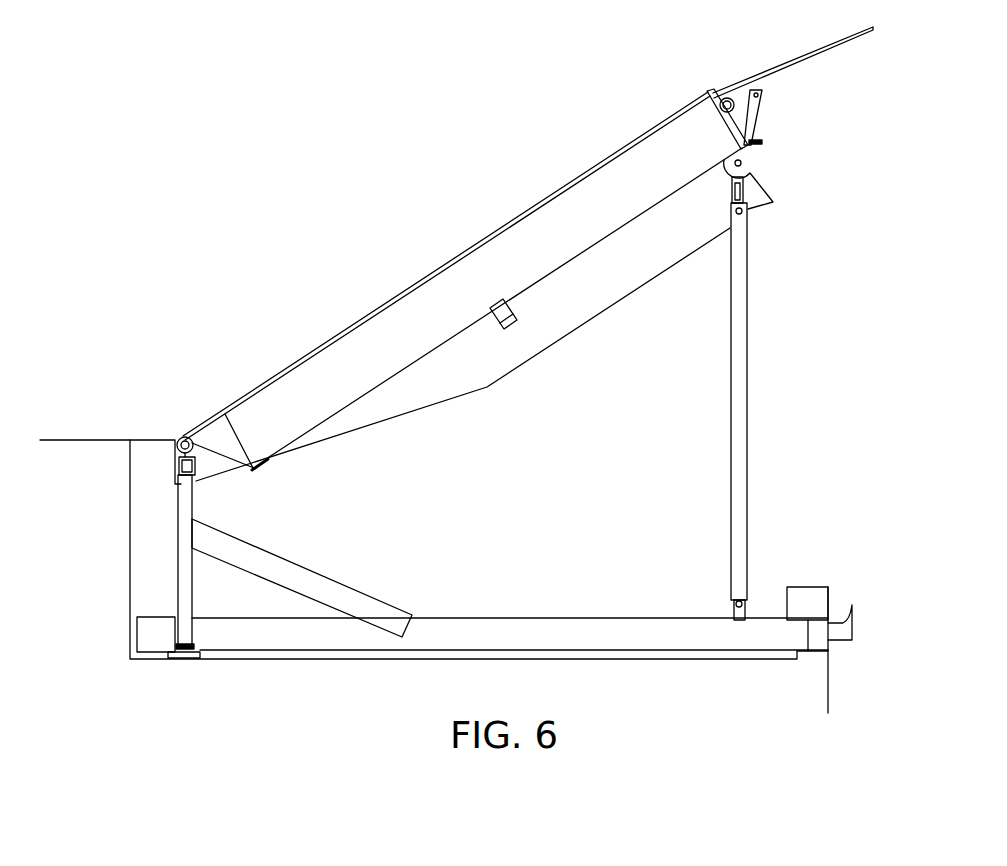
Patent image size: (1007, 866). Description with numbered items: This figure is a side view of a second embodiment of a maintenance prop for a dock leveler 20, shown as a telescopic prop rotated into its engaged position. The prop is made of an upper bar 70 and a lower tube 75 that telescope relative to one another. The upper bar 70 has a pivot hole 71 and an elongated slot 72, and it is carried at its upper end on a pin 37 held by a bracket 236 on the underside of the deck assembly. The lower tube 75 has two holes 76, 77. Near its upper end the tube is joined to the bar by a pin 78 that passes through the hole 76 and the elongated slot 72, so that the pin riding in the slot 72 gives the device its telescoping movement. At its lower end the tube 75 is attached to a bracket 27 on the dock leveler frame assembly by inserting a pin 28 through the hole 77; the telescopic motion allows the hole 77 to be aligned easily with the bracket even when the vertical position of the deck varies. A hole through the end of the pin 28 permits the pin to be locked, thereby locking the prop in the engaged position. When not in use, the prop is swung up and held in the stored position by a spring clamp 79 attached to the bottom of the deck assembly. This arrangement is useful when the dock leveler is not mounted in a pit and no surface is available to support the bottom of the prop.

The dock leveler 20 is at (470, 617).
The bracket 27 is at (714, 578).
The pin 28 is at (673, 571).
The pin 37 is at (807, 162).
The upper bar 70 is at (768, 194).
The pivot hole 71 is at (742, 164).
The elongated slot 72 is at (741, 190).
The lower tube 75 is at (806, 401).
The hole 76 is at (808, 220).
The hole 77 is at (673, 571).
The pin 78 is at (742, 211).
The spring clamp 79 is at (512, 325).
The bracket 236 is at (750, 150).